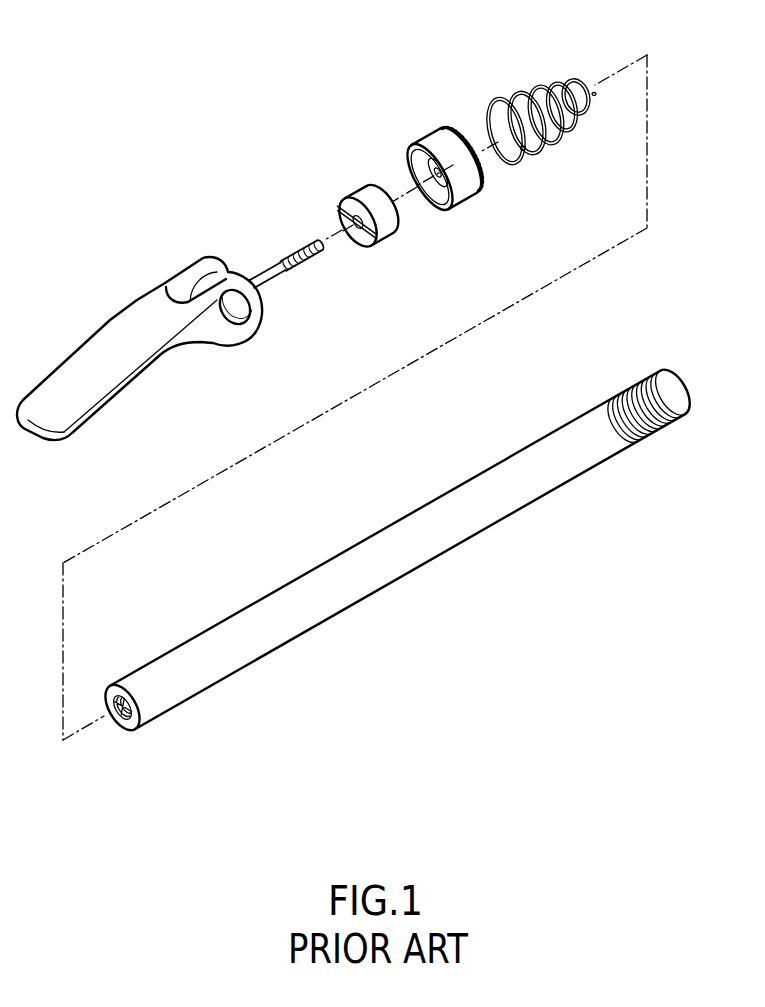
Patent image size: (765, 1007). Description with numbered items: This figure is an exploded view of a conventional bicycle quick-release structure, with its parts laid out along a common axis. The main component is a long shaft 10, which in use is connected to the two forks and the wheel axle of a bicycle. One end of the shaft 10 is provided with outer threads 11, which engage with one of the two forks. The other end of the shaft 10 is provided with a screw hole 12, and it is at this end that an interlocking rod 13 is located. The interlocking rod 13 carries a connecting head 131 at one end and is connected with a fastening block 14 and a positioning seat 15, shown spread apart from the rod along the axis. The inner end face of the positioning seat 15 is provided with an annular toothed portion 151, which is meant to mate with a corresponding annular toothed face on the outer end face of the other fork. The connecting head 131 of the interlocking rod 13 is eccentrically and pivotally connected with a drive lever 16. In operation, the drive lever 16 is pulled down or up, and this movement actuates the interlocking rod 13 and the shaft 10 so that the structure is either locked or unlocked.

The shaft 10 is at (415, 599).
The outer threads 11 is at (657, 423).
The screw hole 12 is at (113, 733).
The interlocking rod 13 is at (300, 242).
The connecting head 131 is at (238, 305).
The fastening block 14 is at (365, 180).
The positioning seat 15 is at (489, 137).
The annular toothed portion 151 is at (483, 175).
The drive lever 16 is at (190, 337).